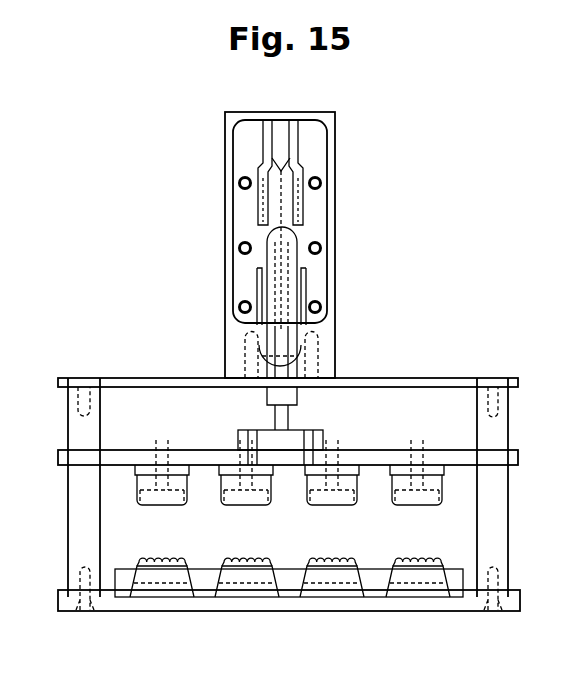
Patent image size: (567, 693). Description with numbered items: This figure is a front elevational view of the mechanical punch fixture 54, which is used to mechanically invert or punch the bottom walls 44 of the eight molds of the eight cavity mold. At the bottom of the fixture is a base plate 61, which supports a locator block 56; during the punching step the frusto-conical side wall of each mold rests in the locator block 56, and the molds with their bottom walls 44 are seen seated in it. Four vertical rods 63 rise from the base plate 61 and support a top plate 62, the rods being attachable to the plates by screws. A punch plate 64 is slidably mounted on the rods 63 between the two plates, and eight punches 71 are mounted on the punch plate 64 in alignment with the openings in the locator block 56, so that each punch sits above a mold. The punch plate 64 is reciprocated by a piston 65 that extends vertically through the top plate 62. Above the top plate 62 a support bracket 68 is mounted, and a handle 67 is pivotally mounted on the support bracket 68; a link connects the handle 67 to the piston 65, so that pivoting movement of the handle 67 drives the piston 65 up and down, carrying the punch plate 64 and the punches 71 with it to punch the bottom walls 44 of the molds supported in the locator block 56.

The support bracket 68 is at (334, 127).
The handle 67 is at (292, 293).
The top plate 62 is at (135, 378).
The punch fixture 54 is at (395, 378).
The punch plate 64 is at (204, 450).
The piston 65 is at (292, 420).
The vertical rods 63 is at (68, 419).
The punches 71 is at (137, 480).
The bottom wall 44 is at (153, 557).
The locator block 56 is at (203, 586).
The base plate 61 is at (372, 609).